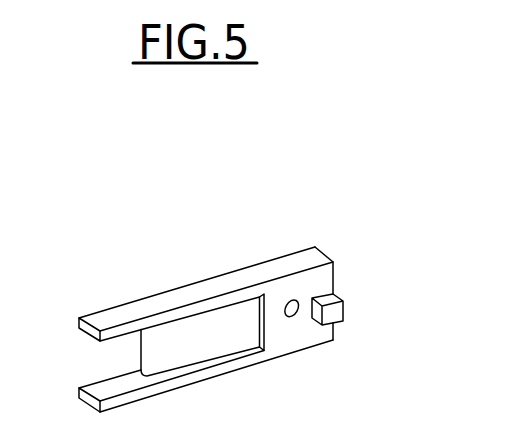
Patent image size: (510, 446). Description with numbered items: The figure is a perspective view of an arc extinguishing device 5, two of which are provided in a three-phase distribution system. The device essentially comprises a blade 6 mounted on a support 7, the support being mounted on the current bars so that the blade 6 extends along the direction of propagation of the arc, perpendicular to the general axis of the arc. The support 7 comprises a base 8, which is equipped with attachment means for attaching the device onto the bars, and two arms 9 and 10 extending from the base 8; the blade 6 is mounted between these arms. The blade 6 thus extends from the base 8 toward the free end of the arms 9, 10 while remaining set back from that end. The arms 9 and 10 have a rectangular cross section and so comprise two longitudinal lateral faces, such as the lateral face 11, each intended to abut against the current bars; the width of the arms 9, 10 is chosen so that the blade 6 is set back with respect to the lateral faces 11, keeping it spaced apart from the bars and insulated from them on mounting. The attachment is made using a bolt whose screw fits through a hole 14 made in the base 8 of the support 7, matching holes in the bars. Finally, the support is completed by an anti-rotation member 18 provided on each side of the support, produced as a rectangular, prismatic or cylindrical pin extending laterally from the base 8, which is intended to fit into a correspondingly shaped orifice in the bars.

The arc extinguishing device 5 is at (364, 276).
The blade 6 is at (212, 337).
The support 7 is at (313, 337).
The base 8 is at (285, 350).
The arm 9 is at (150, 308).
The arm 10 is at (164, 387).
The lateral face 11 is at (217, 295).
The hole 14 is at (298, 300).
The anti-rotation member 18 is at (344, 310).